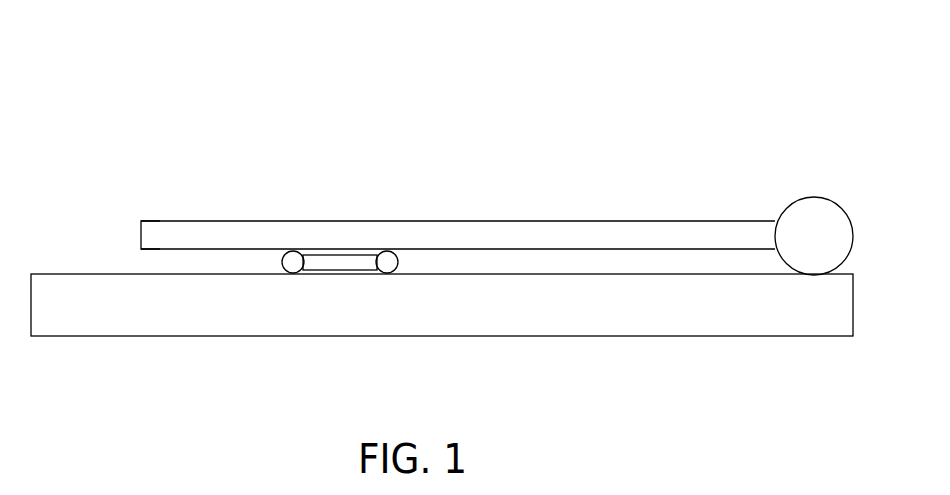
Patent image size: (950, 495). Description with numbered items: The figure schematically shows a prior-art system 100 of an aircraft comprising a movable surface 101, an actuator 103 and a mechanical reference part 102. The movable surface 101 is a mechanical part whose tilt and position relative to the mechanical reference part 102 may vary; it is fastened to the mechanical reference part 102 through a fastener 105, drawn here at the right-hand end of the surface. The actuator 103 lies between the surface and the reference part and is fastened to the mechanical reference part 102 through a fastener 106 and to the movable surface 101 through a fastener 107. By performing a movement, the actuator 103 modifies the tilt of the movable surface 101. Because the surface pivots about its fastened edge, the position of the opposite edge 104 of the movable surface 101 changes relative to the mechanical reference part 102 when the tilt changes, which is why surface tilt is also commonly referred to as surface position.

The system 100 is at (175, 110).
The movable surface 101 is at (458, 221).
The mechanical reference part 102 is at (690, 338).
The actuator 103 is at (318, 253).
The edge 104 is at (152, 232).
The fastener 105 is at (802, 197).
The fastener 106 is at (378, 255).
The fastener 107 is at (282, 258).